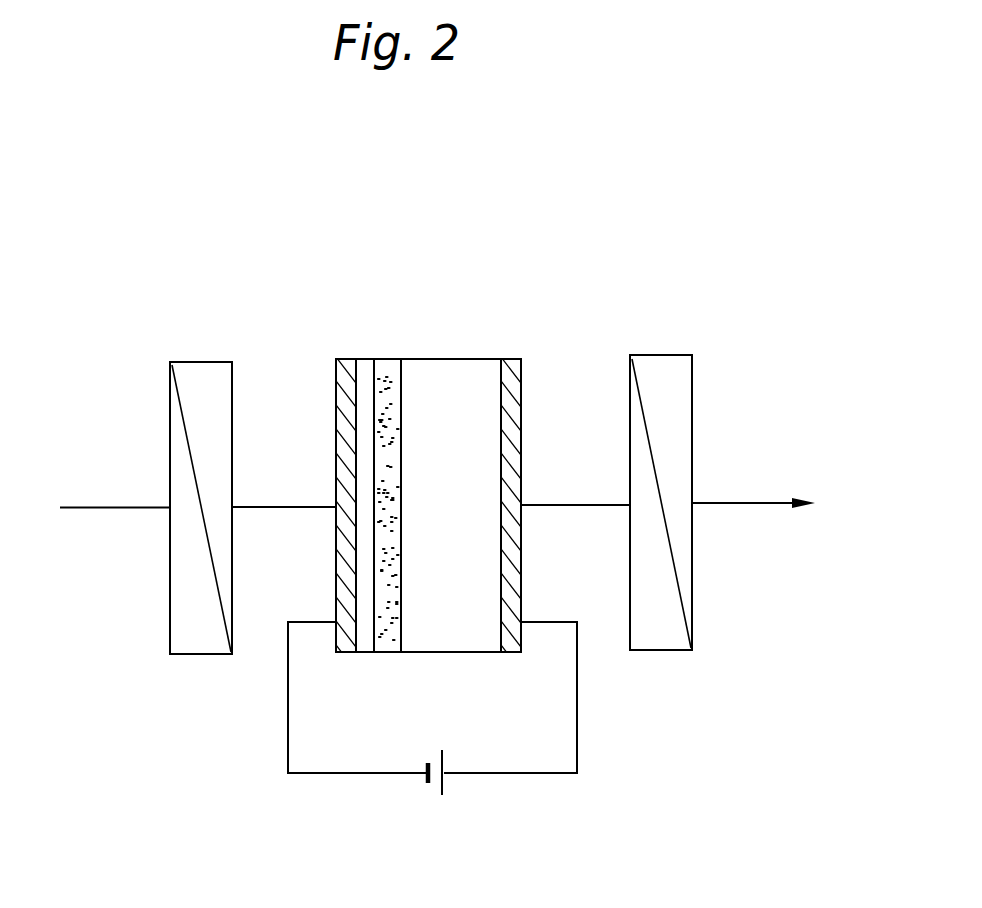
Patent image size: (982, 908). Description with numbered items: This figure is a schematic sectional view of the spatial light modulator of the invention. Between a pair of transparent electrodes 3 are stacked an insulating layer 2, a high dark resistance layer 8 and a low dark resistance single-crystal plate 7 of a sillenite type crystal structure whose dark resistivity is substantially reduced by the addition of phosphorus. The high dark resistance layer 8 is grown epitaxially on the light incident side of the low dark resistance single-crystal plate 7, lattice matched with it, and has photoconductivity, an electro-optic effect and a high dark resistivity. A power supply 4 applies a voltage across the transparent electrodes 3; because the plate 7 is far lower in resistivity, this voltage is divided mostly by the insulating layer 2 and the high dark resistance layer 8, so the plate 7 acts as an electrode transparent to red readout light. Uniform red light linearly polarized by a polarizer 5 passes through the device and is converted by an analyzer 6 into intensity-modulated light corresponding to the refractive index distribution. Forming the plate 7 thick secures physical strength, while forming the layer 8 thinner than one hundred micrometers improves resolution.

The insulating layer 2 is at (363, 365).
The transparent electrodes 3 is at (347, 359).
The power supply 4 is at (532, 788).
The polarizer 5 is at (172, 388).
The analyzer 6 is at (634, 357).
The low dark resistance single-crystal plate 7 is at (452, 365).
The high dark resistance layer 8 is at (392, 365).